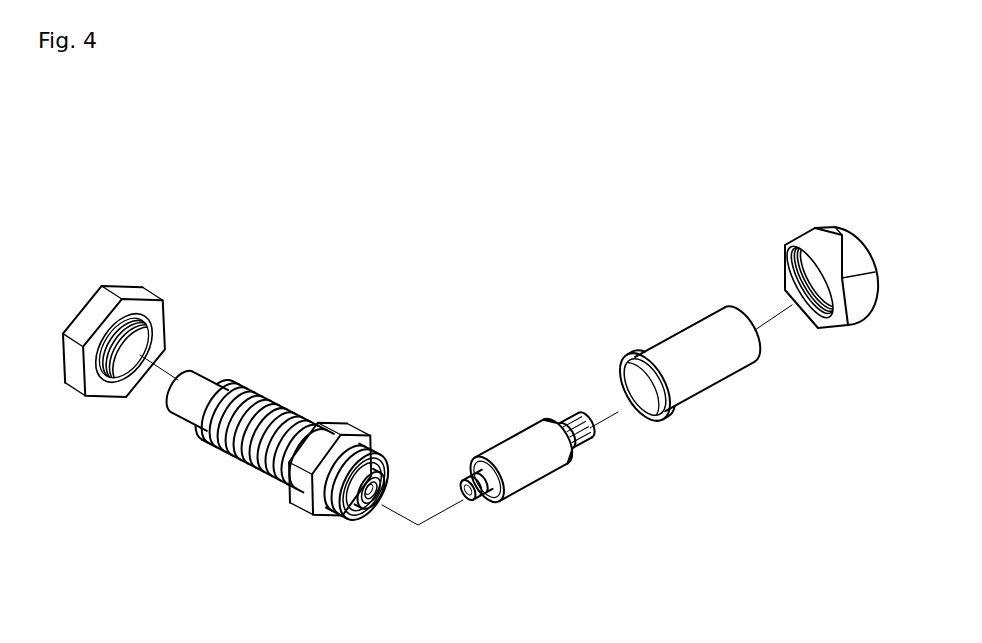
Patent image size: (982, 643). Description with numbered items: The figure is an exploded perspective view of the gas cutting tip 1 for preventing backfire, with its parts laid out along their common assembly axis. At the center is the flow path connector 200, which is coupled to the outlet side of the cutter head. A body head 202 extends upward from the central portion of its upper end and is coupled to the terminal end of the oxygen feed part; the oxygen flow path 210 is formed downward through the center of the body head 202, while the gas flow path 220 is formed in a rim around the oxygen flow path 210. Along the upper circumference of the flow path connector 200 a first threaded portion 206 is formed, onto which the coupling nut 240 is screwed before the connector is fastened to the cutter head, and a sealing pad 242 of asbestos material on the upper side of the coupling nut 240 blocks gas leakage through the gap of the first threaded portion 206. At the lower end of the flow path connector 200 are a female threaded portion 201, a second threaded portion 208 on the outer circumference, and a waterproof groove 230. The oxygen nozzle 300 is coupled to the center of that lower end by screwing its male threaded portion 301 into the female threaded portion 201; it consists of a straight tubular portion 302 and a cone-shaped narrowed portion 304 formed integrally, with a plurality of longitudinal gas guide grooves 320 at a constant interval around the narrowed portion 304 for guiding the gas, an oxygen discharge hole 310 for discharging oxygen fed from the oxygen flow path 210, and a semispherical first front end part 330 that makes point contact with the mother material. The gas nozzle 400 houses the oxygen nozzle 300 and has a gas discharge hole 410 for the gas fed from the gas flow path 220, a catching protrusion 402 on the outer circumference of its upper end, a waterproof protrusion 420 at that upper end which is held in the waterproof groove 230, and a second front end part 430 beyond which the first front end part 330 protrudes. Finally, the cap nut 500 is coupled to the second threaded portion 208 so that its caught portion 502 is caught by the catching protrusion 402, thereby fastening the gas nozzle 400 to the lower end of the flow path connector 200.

The gas cutting tip 1 is at (406, 242).
The flow path connector 200 is at (271, 362).
The female threaded portion 201 is at (355, 436).
The body head 202 is at (188, 397).
The first threaded portion 206 is at (232, 452).
The second threaded portion 208 is at (332, 518).
The oxygen flow path 210 is at (379, 490).
The gas flow path 220 is at (373, 527).
The waterproof groove 230 is at (356, 526).
The coupling nut 240 is at (158, 276).
The sealing pad 242 is at (124, 330).
The oxygen nozzle 300 is at (508, 421).
The male threaded portion 301 is at (488, 503).
The straight tubular portion 302 is at (522, 474).
The narrowed portion 304 is at (551, 440).
The oxygen discharge hole 310 is at (464, 505).
The gas guide grooves 320 is at (558, 446).
The first front end part 330 is at (589, 428).
The gas nozzle 400 is at (673, 314).
The catching protrusion 402 is at (690, 401).
The gas discharge hole 410 is at (632, 386).
The waterproof protrusion 420 is at (657, 420).
The second front end part 430 is at (755, 345).
The cap nut 500 is at (797, 213).
The caught portion 502 is at (832, 272).